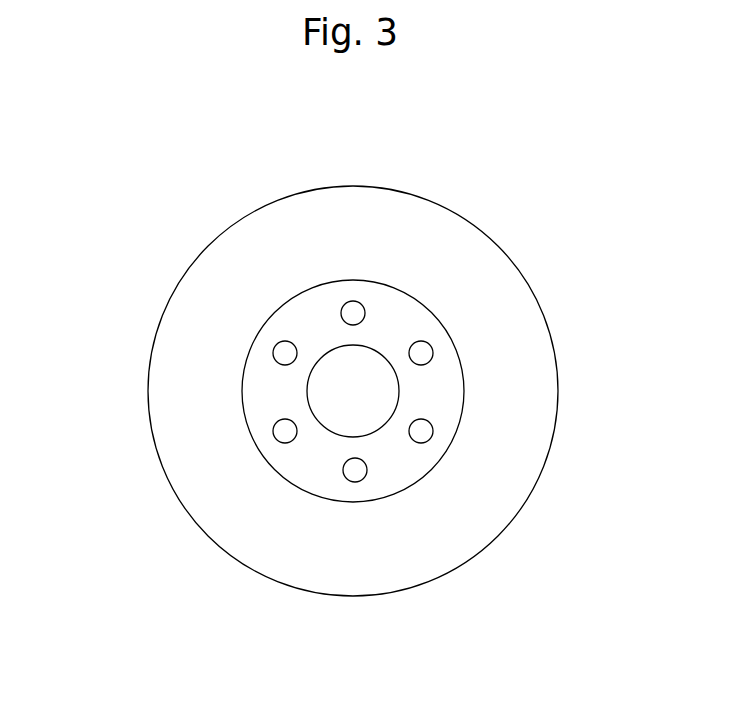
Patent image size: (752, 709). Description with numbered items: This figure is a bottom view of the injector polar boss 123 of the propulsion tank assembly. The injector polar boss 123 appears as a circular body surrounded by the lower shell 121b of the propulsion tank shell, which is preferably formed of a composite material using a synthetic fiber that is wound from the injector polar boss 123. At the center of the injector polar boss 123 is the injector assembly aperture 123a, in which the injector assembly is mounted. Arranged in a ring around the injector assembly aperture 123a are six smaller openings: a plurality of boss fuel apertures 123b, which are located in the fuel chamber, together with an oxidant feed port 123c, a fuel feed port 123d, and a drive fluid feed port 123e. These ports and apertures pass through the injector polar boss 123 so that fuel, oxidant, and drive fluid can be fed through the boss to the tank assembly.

The lower shell 121b is at (558, 396).
The injector polar boss 123 is at (423, 480).
The injector assembly aperture 123a is at (384, 360).
The boss fuel apertures 123b is at (353, 301).
The oxidant feed port 123c is at (433, 352).
The fuel feed port 123d is at (355, 483).
The drive fluid feed port 123e is at (273, 353).